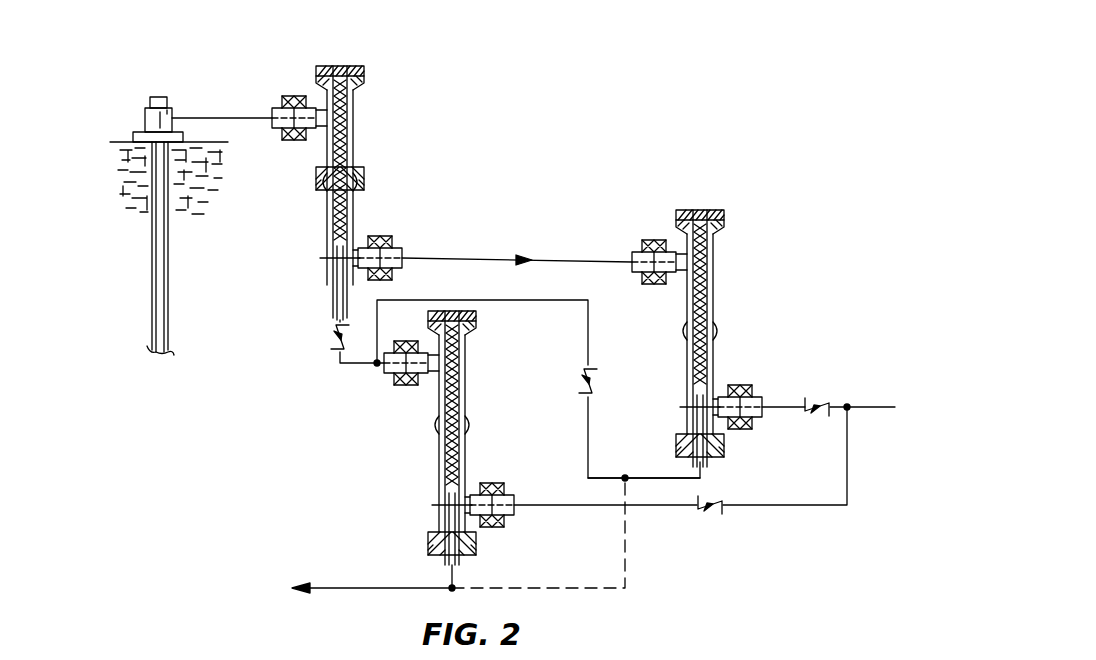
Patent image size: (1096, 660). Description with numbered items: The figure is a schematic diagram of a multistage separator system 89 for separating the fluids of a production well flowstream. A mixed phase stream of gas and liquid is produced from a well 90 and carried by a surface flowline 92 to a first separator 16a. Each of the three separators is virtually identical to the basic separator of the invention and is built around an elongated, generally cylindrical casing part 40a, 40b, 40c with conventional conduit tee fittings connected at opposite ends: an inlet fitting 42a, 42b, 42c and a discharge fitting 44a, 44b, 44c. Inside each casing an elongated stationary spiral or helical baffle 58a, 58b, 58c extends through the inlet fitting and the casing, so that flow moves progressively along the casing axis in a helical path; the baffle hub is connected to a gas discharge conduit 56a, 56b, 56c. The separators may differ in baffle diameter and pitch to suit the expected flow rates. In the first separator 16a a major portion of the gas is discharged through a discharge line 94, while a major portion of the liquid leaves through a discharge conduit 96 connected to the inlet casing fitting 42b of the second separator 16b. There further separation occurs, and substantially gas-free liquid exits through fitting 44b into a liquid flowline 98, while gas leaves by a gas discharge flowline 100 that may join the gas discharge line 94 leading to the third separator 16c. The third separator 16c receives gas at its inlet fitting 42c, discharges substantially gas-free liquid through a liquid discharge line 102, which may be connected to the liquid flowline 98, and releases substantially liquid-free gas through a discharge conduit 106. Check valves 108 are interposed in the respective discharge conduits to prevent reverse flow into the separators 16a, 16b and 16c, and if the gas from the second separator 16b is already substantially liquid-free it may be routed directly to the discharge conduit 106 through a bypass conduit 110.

The separator system 89 is at (535, 196).
The well 90 is at (134, 100).
The surface flowline 92 is at (222, 117).
The discharge line 94 is at (356, 366).
The discharge line or conduit 96 is at (431, 256).
The liquid flowline 98 is at (785, 405).
The gas discharge flowline 100 is at (702, 478).
The liquid discharge line 102 is at (545, 506).
The discharge conduit 106 is at (373, 586).
The check valve 108 is at (336, 342).
The bypass conduit 110 is at (627, 590).
The first separator 16a is at (347, 183).
The second separator 16b is at (709, 338).
The third separator 16c is at (453, 443).
The casing part 40a is at (354, 156).
The casing part 40b is at (688, 310).
The casing part 40c is at (466, 410).
The inlet conduit fitting 42a is at (352, 100).
The inlet casing fitting 42b is at (712, 262).
The inlet fitting 42c is at (466, 363).
The discharge conduit fitting 44a is at (327, 252).
The discharge fitting 44b is at (687, 398).
The discharge fitting 44c is at (440, 492).
The gas discharge conduit 56a is at (331, 290).
The gas discharge conduit 56b is at (691, 430).
The gas discharge conduit 56c is at (471, 528).
The spiral baffle 58a is at (358, 183).
The spiral baffle 58b is at (713, 333).
The spiral baffle 58c is at (440, 430).